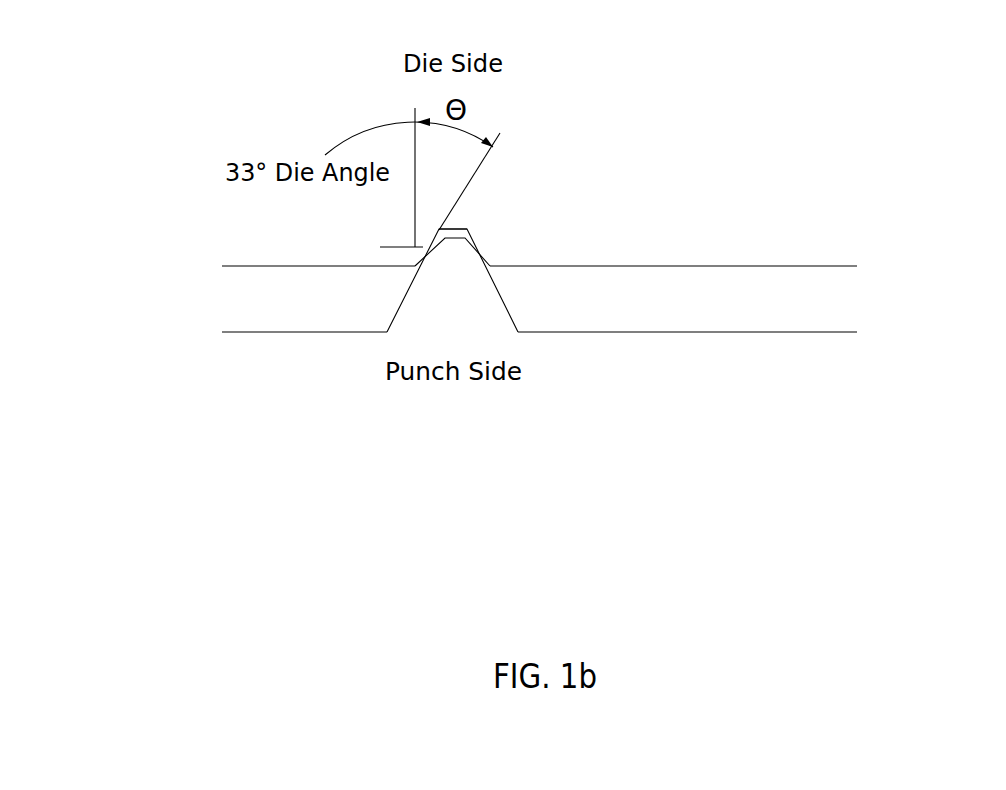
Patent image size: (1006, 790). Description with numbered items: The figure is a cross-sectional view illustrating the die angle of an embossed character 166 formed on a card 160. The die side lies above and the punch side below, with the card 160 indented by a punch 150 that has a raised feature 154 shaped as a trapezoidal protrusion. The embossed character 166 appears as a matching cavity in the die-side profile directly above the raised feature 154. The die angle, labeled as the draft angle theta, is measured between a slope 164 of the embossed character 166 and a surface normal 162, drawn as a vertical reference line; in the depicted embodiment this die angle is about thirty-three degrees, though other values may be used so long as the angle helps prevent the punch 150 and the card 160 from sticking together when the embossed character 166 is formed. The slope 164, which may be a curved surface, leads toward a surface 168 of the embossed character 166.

The punch 150 is at (760, 335).
The raised feature 154 is at (398, 298).
The card 160 is at (837, 260).
The surface normal 162 is at (413, 198).
The slope 164 is at (423, 247).
The embossed character 166 is at (479, 247).
The surface 168 is at (452, 230).